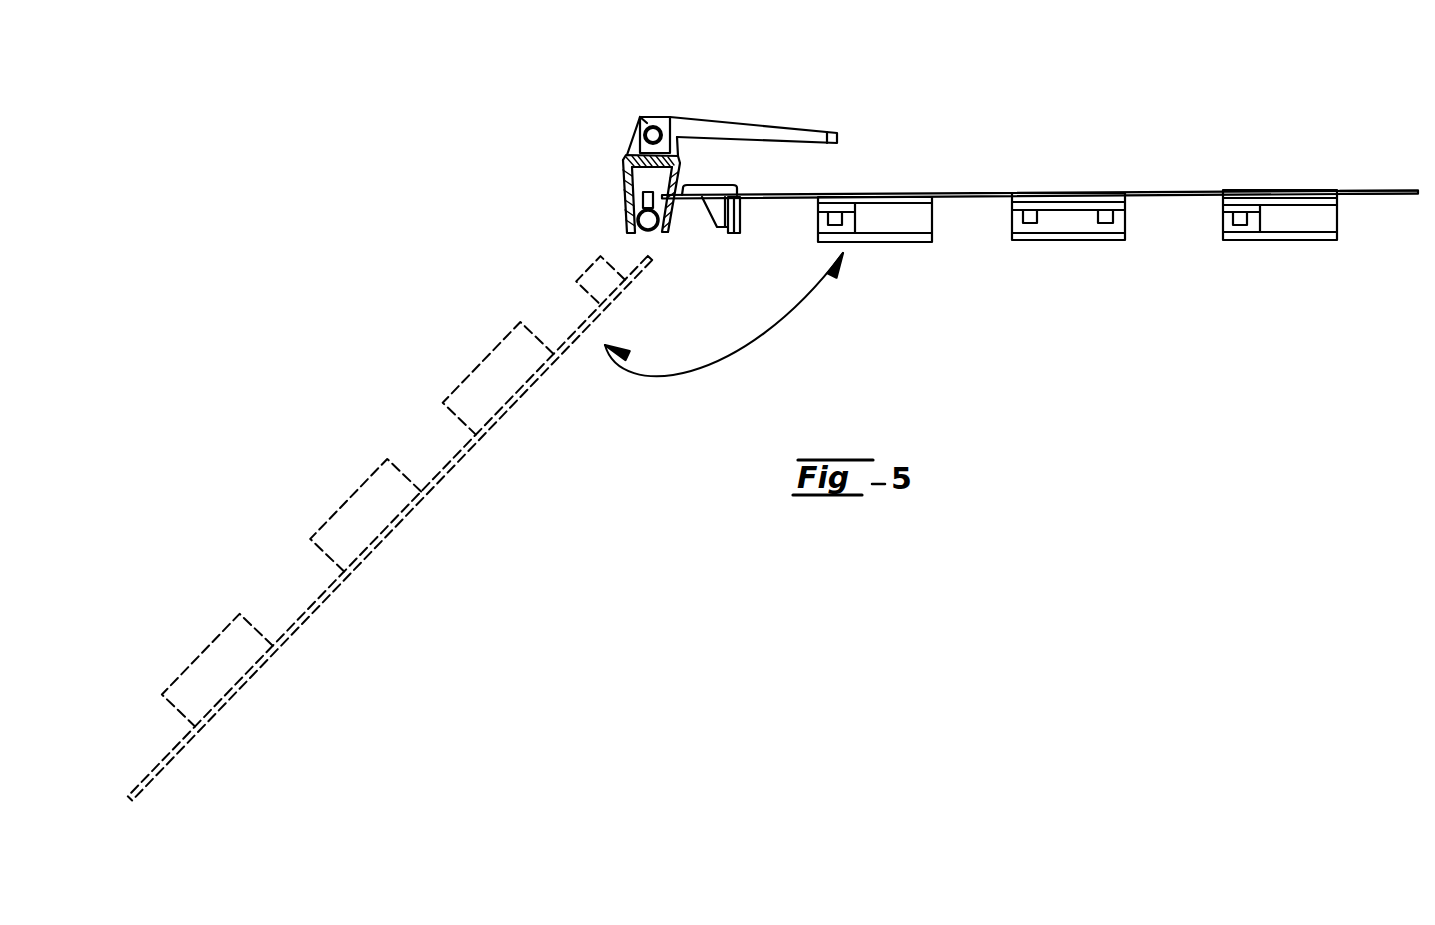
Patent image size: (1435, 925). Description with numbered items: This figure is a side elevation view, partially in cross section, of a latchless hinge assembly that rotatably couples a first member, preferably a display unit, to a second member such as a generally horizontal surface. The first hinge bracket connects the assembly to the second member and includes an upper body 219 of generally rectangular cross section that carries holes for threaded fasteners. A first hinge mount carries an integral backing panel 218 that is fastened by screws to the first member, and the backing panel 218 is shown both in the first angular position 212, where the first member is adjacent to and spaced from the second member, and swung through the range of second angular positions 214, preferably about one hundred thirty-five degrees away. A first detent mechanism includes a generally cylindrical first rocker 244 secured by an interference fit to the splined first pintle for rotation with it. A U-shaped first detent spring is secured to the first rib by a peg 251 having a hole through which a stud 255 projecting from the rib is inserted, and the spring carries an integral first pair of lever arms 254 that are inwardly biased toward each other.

The first angular position 212 is at (1418, 191).
The range of second angular positions 214 is at (749, 366).
The backing panel 218 is at (1170, 190).
The upper body 219 is at (742, 122).
The first rocker 244 is at (636, 220).
The peg 251 is at (645, 118).
The first pair of lever arms 254 is at (624, 164).
The stud 255 is at (651, 124).